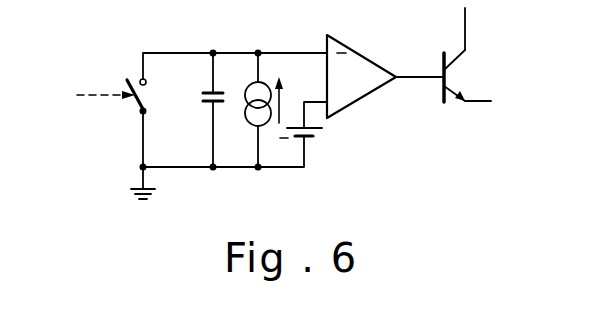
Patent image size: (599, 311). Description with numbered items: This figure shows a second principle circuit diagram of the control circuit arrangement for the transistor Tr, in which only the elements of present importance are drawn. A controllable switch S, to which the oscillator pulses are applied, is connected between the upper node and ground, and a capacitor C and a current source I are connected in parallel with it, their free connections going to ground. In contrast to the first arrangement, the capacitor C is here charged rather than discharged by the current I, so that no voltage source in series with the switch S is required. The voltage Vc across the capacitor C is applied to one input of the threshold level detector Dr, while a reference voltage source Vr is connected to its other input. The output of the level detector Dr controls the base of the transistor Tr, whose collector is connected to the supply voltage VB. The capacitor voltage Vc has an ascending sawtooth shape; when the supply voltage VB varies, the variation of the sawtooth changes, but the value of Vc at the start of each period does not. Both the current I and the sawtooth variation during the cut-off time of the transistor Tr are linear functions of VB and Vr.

The controllable switch S is at (135, 103).
The capacitor C is at (203, 97).
The capacitor voltage Vc is at (213, 50).
The current source I is at (268, 101).
The reference voltage source Vr is at (313, 138).
The threshold level detector Dr is at (362, 56).
The transistor Tr is at (448, 76).
The supply voltage VB is at (465, 36).